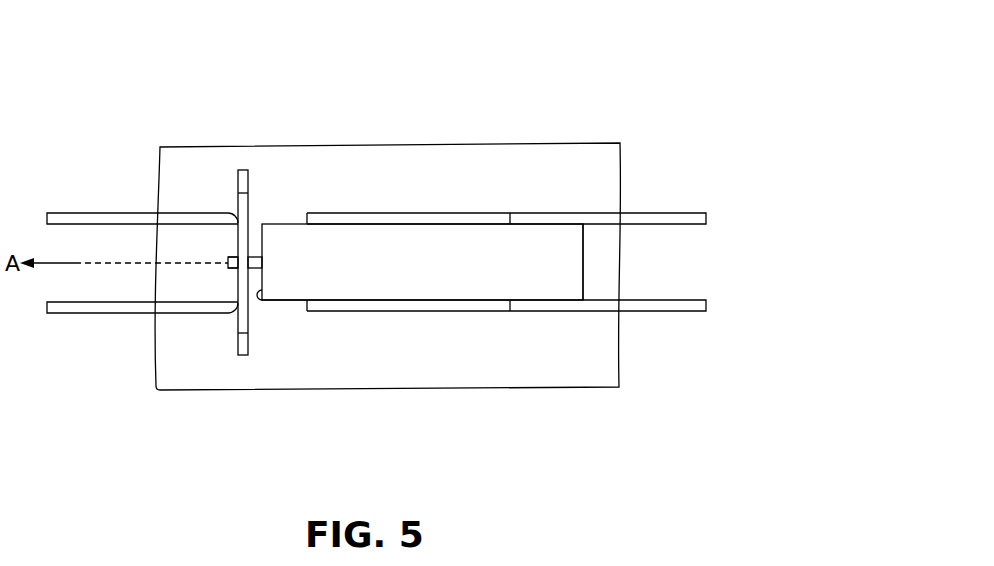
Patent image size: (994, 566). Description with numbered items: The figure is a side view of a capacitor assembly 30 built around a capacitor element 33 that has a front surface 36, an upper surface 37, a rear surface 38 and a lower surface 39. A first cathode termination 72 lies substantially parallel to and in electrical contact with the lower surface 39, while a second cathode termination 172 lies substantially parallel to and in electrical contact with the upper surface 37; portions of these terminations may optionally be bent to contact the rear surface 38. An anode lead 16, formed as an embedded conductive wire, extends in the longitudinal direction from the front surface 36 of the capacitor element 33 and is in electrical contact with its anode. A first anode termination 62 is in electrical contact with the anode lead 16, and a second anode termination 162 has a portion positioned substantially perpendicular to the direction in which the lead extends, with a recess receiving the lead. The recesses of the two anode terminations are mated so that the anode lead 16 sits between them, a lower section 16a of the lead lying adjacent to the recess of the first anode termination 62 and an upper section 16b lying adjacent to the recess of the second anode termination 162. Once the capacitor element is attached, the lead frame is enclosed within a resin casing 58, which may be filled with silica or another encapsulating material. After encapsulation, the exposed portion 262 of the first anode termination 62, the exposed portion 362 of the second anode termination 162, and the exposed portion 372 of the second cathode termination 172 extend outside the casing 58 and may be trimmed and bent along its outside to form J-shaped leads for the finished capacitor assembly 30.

The capacitor assembly 30 is at (549, 75).
The resin casing 58 is at (168, 392).
The anode lead 16 is at (254, 257).
The lower section of the anode lead 16a is at (229, 272).
The upper section of the anode lead 16b is at (229, 254).
The second anode termination 162 is at (177, 208).
The exposed portion of the second anode termination 362 is at (77, 216).
The exposed portion of the first anode termination 262 is at (73, 314).
The first anode termination 62 is at (192, 322).
The capacitor element 33 is at (430, 276).
The front surface 36 is at (265, 289).
The upper surface 37 is at (295, 222).
The rear surface 38 is at (583, 250).
The lower surface 39 is at (290, 303).
The second cathode termination 172 is at (580, 206).
The exposed portion of the second cathode termination 372 is at (647, 212).
The first cathode termination 72 is at (572, 318).